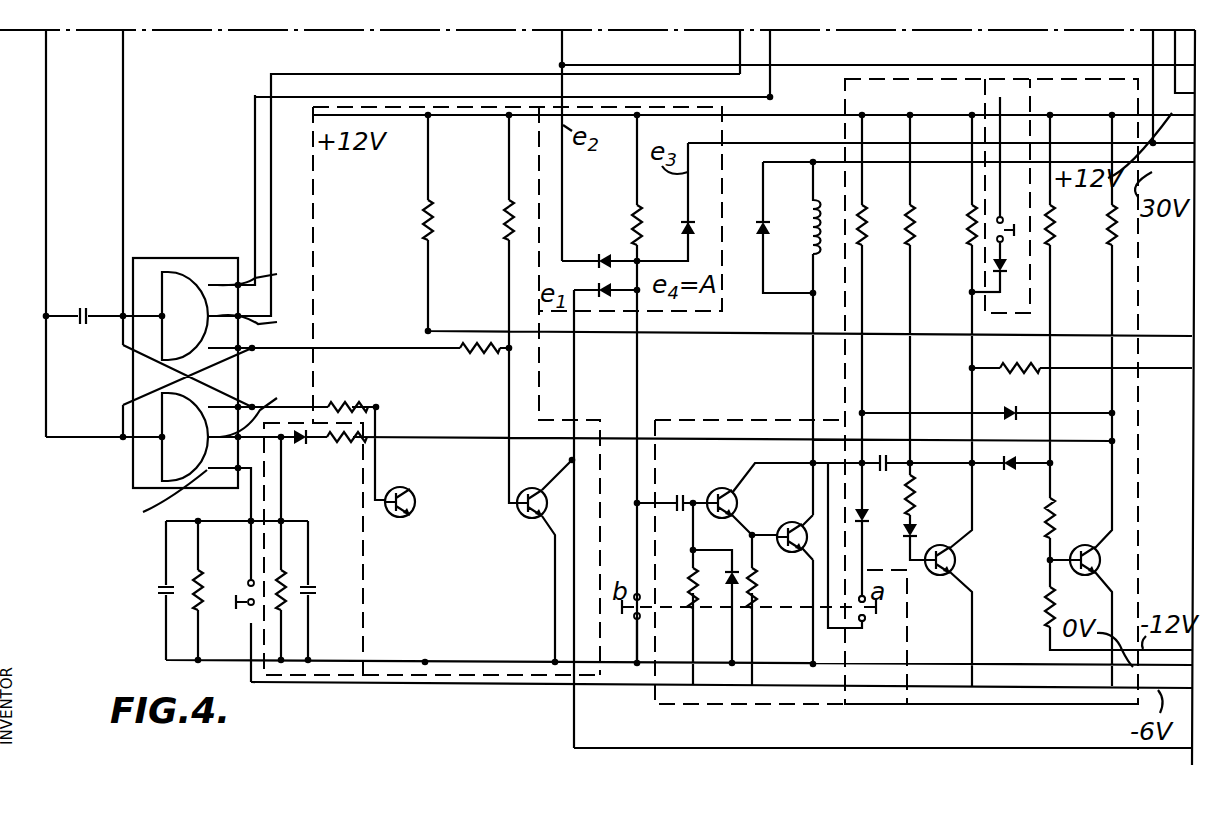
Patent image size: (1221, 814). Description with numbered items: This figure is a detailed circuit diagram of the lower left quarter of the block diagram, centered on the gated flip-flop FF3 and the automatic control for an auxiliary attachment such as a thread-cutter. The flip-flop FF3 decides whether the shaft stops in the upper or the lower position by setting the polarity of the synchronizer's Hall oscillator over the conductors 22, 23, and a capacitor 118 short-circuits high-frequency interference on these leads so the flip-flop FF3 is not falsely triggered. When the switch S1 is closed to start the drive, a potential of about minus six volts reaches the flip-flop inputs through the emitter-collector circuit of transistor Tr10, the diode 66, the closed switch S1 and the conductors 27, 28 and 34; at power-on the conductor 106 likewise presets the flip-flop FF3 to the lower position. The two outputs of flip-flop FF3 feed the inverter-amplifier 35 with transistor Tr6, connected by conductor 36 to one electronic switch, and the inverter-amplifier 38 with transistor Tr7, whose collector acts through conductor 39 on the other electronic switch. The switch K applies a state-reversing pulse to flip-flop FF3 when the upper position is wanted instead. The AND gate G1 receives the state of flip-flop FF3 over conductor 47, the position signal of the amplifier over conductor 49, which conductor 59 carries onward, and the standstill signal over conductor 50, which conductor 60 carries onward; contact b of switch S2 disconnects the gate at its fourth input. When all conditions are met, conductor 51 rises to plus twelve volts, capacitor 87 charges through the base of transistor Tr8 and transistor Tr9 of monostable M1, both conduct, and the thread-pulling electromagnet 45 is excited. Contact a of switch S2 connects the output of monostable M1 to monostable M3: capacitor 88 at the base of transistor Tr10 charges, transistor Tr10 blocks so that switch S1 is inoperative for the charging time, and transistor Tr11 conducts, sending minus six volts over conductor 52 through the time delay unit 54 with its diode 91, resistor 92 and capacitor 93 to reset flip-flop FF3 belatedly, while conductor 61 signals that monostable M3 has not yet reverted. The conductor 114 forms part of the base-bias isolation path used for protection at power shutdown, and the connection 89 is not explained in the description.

The conductor 22 is at (47, 54).
The conductor 23 is at (124, 54).
The capacitor 118 is at (80, 308).
The conductor 34 is at (255, 134).
The conductor 49 is at (560, 52).
The conductor 106 is at (740, 55).
The conductor 28 is at (771, 56).
The conductor 59 is at (1057, 64).
The conductor 50 is at (1153, 55).
The conductor 114 is at (1173, 78).
The conductor 27 is at (988, 100).
The conductor 60 is at (1168, 147).
The thread-pulling electromagnet 45 is at (796, 208).
The conductor 36 is at (478, 330).
The conductor 47 is at (574, 358).
The conductor 51 is at (639, 368).
The conductor 52 is at (780, 440).
The junction line 89 is at (972, 292).
The diode 66 is at (1008, 272).
The conductor 61 is at (1063, 370).
The diode 91 is at (300, 444).
The resistor 92 is at (336, 445).
The capacitor 93 is at (310, 590).
The capacitor 87 is at (678, 520).
The capacitor 88 is at (882, 470).
The time delay unit 54 is at (335, 652).
The inverter-amplifier 35 is at (393, 688).
The inverter-amplifier 38 is at (500, 652).
The conductor 39 is at (752, 747).
The gated flip-flop FF3 is at (175, 264).
The AND gate G1 is at (718, 264).
The switch S1 is at (1015, 216).
The switch S2 is at (808, 607).
The switch K is at (250, 583).
The monostable multivibrator M1 is at (668, 693).
The monostable multivibrator M3 is at (920, 700).
The transistor Tr6 is at (393, 519).
The transistor Tr7 is at (533, 561).
The transistor Tr8 is at (704, 489).
The transistor Tr9 is at (779, 524).
The transistor Tr10 is at (971, 564).
The transistor Tr11 is at (1085, 545).